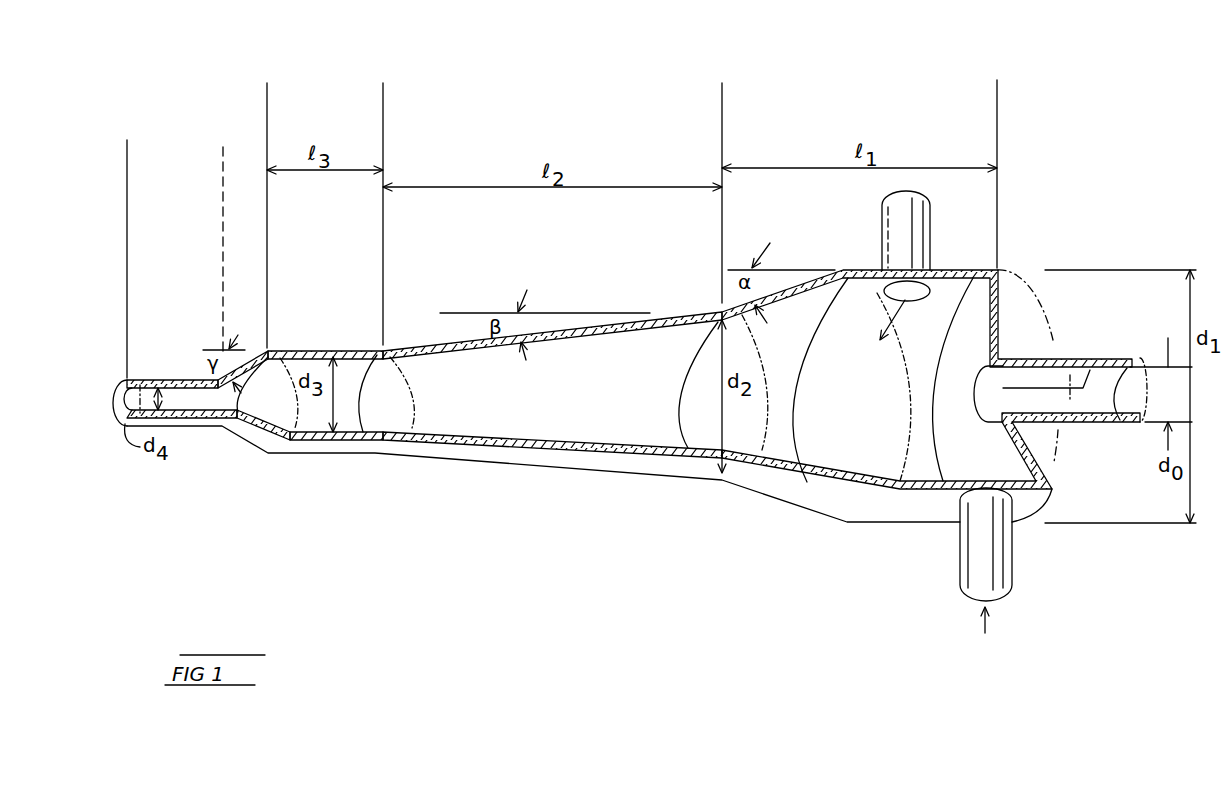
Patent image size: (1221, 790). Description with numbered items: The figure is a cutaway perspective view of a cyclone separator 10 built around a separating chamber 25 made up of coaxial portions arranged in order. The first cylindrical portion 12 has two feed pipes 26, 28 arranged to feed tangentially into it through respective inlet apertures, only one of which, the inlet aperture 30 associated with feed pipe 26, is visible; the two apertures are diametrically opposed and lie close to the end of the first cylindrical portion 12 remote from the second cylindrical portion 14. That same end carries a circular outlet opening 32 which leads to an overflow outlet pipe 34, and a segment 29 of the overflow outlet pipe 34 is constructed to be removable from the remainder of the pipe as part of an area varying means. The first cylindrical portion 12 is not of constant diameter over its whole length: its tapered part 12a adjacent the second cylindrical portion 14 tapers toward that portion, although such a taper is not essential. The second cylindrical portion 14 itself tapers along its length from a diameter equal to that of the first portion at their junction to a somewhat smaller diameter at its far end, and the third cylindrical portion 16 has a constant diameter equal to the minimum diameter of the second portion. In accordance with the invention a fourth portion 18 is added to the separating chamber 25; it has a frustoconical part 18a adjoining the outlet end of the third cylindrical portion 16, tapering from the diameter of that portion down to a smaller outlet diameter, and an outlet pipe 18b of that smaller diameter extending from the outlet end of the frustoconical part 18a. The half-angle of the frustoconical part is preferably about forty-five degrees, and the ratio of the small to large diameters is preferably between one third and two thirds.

The separator 10 is at (664, 66).
The first cylindrical portion 12 is at (931, 296).
The tapered part of first cylindrical portion 12a is at (806, 466).
The second cylindrical portion 14 is at (722, 91).
The third cylindrical portion 16 is at (383, 91).
The fourth portion 18 is at (205, 273).
The frustoconical part 18a is at (267, 280).
The outlet pipe 18b is at (223, 280).
The separating chamber 25 is at (565, 413).
The feed pipe 26 is at (912, 238).
The feed pipe 28 is at (1000, 548).
The segment 29 is at (1040, 375).
The inlet aperture 30 is at (918, 298).
The circular outlet opening 32 is at (982, 478).
The overflow outlet pipe 34 is at (1103, 418).